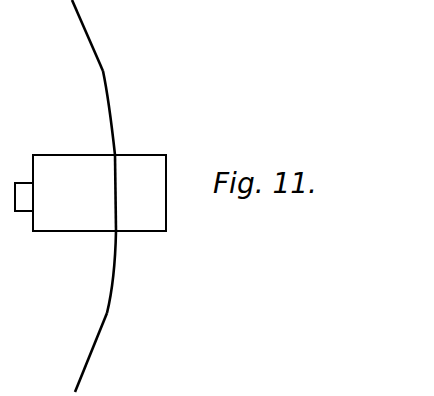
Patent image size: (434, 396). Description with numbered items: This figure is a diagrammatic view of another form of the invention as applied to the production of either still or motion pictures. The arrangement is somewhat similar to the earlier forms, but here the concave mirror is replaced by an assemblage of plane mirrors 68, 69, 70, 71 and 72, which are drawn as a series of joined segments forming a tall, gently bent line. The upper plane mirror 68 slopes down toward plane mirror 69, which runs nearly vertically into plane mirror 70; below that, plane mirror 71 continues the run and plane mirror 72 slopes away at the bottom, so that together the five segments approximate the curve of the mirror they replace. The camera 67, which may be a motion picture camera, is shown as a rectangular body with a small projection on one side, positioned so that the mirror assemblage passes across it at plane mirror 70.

The camera 67 is at (133, 165).
The plane mirror 68 is at (93, 56).
The plane mirror 69 is at (110, 126).
The plane mirror 70 is at (115, 203).
The plane mirror 71 is at (110, 263).
The plane mirror 72 is at (87, 358).